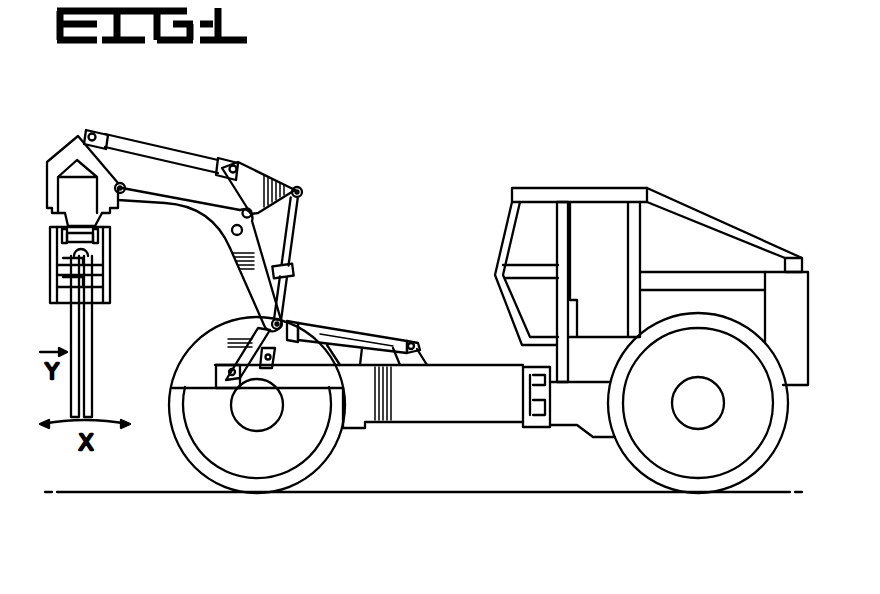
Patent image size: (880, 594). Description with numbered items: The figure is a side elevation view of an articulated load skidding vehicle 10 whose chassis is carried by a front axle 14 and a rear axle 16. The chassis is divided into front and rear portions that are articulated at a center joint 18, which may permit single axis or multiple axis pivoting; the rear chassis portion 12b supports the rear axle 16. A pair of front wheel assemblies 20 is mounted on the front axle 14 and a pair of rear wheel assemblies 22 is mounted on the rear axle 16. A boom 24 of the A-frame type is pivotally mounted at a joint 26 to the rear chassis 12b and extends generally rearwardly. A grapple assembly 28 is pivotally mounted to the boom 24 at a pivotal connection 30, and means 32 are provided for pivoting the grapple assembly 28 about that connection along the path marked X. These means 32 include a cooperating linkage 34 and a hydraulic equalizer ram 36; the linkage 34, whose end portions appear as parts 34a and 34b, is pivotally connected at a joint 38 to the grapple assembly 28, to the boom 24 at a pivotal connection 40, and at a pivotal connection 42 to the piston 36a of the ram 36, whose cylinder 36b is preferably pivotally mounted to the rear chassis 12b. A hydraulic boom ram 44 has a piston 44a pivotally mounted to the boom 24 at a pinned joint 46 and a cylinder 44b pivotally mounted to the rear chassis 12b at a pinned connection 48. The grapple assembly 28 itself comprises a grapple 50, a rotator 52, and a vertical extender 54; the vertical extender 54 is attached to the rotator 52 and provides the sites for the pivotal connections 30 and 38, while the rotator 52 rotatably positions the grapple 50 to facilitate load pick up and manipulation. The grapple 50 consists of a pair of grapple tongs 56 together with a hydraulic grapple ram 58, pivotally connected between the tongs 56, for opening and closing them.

The articulated load skidding vehicle 10 is at (462, 226).
The rear chassis portion 12b is at (476, 414).
The front axle 14 is at (680, 412).
The rear axle 16 is at (243, 410).
The center joint 18 is at (540, 427).
The front wheel assemblies 20 is at (750, 470).
The rear wheel assemblies 22 is at (324, 455).
The boom 24 is at (205, 229).
The joint 26 is at (218, 372).
The grapple assembly 28 is at (113, 159).
The pivotal connection 30 is at (126, 187).
The means for pivoting the grapple assembly 32 is at (262, 160).
The linkage 34 is at (175, 142).
The cylinder end bracket 34a is at (102, 139).
The piston rod end 34b is at (291, 183).
The hydraulic equalizer ram 36 is at (292, 283).
The piston 36a is at (300, 222).
The cylinder 36b is at (288, 318).
The joint 38 is at (94, 134).
The pivotal connection 40 is at (250, 217).
The pivotal connection 42 is at (303, 192).
The hydraulic boom ram 44 is at (360, 354).
The piston 44a is at (300, 326).
The cylinder 44b is at (398, 355).
The pinned joint 46 is at (240, 312).
The pinned connection 48 is at (414, 346).
The grapple 50 is at (112, 283).
The rotator 52 is at (84, 215).
The vertical extender 54 is at (64, 154).
The grapple tongs 56 is at (86, 379).
The hydraulic grapple ram 58 is at (96, 253).